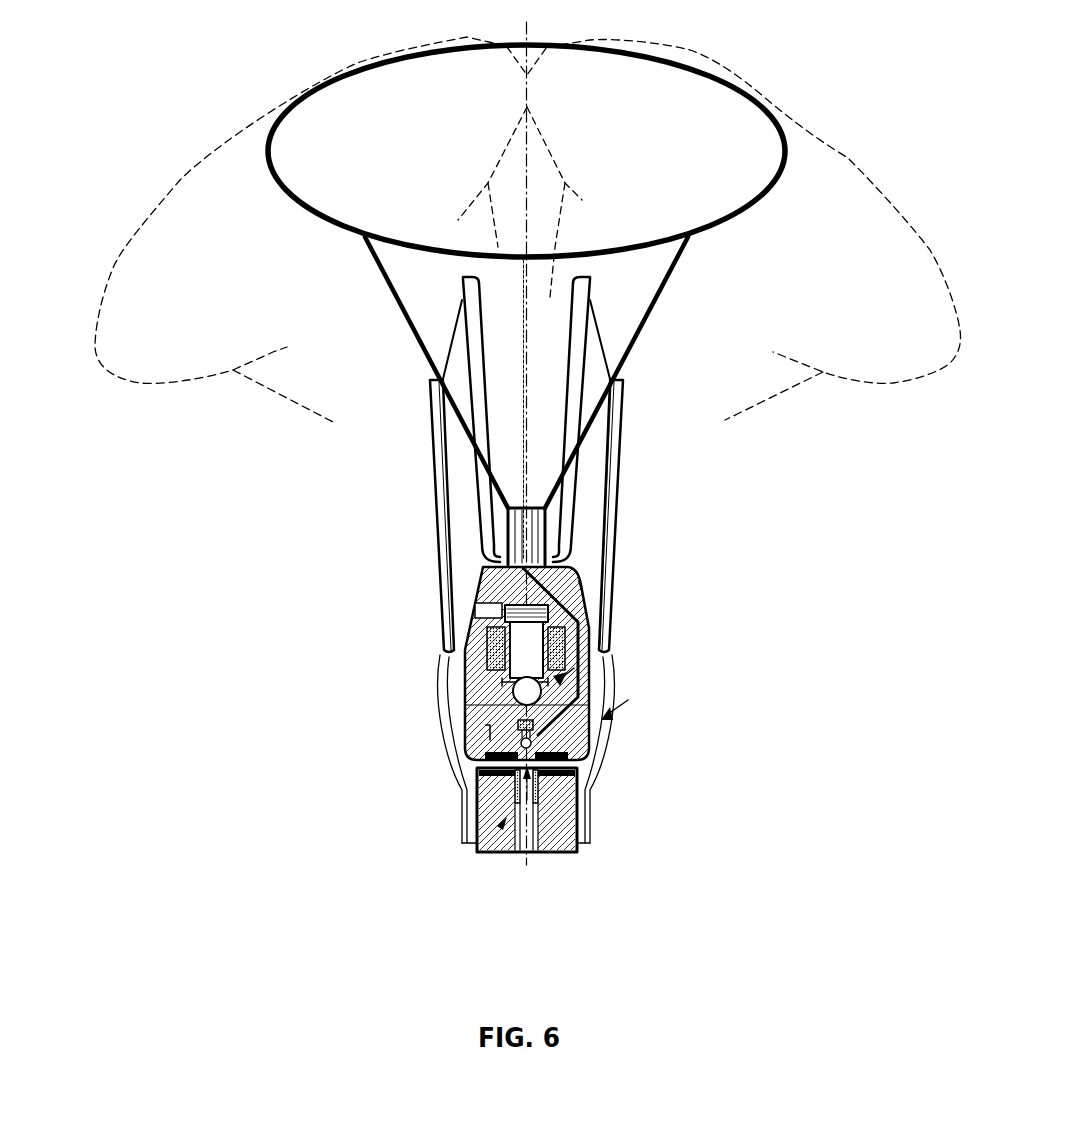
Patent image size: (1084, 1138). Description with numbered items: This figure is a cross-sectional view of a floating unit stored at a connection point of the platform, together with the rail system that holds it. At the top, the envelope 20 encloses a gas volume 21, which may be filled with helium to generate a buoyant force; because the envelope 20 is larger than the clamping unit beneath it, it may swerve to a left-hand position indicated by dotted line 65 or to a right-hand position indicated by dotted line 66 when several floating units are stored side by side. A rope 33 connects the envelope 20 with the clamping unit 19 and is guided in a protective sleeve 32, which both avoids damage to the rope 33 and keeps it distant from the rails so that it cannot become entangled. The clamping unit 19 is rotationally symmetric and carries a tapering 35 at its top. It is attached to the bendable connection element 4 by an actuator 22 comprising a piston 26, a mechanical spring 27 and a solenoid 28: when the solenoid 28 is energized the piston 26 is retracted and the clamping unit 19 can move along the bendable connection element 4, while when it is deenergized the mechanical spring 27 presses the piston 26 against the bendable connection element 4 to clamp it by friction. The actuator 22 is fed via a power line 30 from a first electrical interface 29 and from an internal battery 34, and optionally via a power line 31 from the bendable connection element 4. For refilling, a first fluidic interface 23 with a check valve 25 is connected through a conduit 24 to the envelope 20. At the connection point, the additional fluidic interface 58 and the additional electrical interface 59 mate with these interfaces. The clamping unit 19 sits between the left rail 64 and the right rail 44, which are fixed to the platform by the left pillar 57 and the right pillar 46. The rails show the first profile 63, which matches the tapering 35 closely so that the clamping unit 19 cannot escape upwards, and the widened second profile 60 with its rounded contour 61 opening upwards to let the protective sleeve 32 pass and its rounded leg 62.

The bendable connection element 4 is at (440, 738).
The clamping unit 19 is at (604, 748).
The envelope 20 is at (347, 152).
The gas volume 21 is at (441, 153).
The actuator 22 is at (610, 672).
The first fluidic interface 23 is at (553, 810).
The conduit 24 is at (520, 373).
The check valve 25 is at (590, 787).
The piston 26 is at (470, 636).
The mechanical spring 27 is at (565, 657).
The solenoid 28 is at (580, 663).
The first electrical interface 29 is at (463, 803).
The power line 30 is at (498, 683).
The power line 31 is at (500, 697).
The protective sleeve 32 is at (500, 525).
The rope 33 is at (383, 280).
The internal battery 34 is at (453, 603).
The tapering 35 is at (487, 606).
The right rail 44 is at (593, 443).
The right pillar 46 is at (605, 760).
The left pillar 57 is at (452, 752).
The additional fluidic interface 58 is at (503, 835).
The additional electrical interface 59 is at (500, 775).
The second profile 60 is at (605, 338).
The rounded contour 61 is at (578, 278).
The rounded leg 62 is at (623, 393).
The first profile 63 is at (582, 585).
The left rail 64 is at (458, 355).
The dotted line 65 is at (187, 177).
The dotted line 66 is at (848, 157).